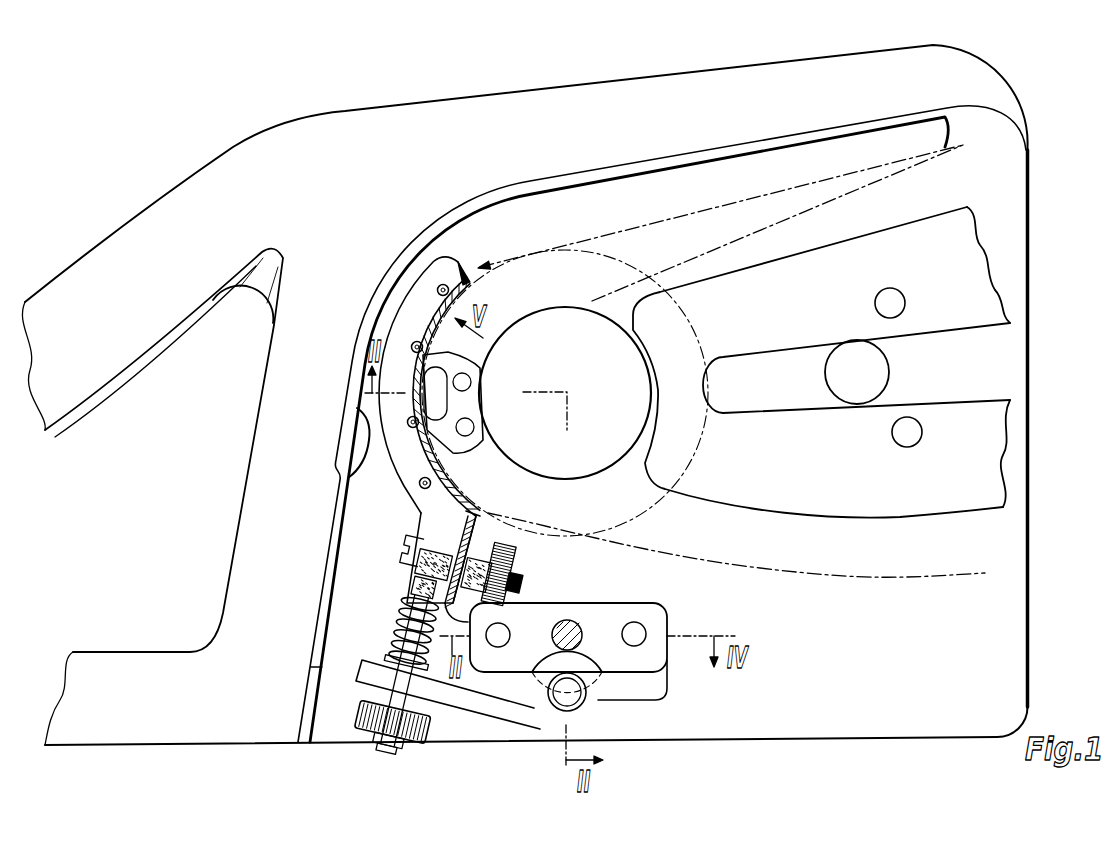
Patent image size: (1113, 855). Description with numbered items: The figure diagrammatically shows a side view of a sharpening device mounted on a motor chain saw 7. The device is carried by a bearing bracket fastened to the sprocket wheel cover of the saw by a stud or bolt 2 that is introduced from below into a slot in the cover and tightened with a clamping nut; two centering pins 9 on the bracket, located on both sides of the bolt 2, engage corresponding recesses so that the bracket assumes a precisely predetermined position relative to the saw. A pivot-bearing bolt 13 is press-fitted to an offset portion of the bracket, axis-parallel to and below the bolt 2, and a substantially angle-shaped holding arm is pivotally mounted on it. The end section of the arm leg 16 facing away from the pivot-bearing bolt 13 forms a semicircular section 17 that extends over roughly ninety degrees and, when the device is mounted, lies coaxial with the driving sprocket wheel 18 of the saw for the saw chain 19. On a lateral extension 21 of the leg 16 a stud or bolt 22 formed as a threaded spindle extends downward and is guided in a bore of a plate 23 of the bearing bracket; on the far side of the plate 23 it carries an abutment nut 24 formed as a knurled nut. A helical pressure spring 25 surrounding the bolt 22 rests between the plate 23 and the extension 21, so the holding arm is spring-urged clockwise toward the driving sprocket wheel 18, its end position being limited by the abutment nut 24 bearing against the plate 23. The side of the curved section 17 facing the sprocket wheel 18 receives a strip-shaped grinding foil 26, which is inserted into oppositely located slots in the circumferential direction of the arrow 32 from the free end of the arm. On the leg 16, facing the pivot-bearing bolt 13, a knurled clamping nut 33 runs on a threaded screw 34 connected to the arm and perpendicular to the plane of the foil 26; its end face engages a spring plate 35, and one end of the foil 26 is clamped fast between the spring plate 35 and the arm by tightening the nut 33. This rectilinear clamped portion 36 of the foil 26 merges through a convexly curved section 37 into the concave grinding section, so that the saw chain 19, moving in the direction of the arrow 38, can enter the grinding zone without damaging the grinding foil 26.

The motor chain saw 7 is at (1033, 200).
The semicircular section 17 is at (417, 297).
The grinding foil 26 is at (463, 273).
The arrow 32 is at (636, 429).
The saw chain 19 is at (468, 393).
The driving sprocket wheel 18 is at (612, 458).
The leg 16 is at (427, 522).
The convexly curved section 37 is at (483, 513).
The spring plate 35 is at (478, 548).
The clamped portion 36 is at (468, 553).
The extension 21 is at (412, 585).
The stud or bolt 22 is at (418, 627).
The helical pressure spring 25 is at (400, 653).
The abutment nut 24 is at (413, 740).
The clamping nut 33 is at (510, 562).
The threaded screw 34 is at (523, 587).
The arrow 38 is at (780, 582).
The stud or bolt 2 is at (573, 637).
The centering pins 9 is at (640, 633).
The plate 23 is at (455, 690).
The pivot-bearing bolt 13 is at (577, 700).